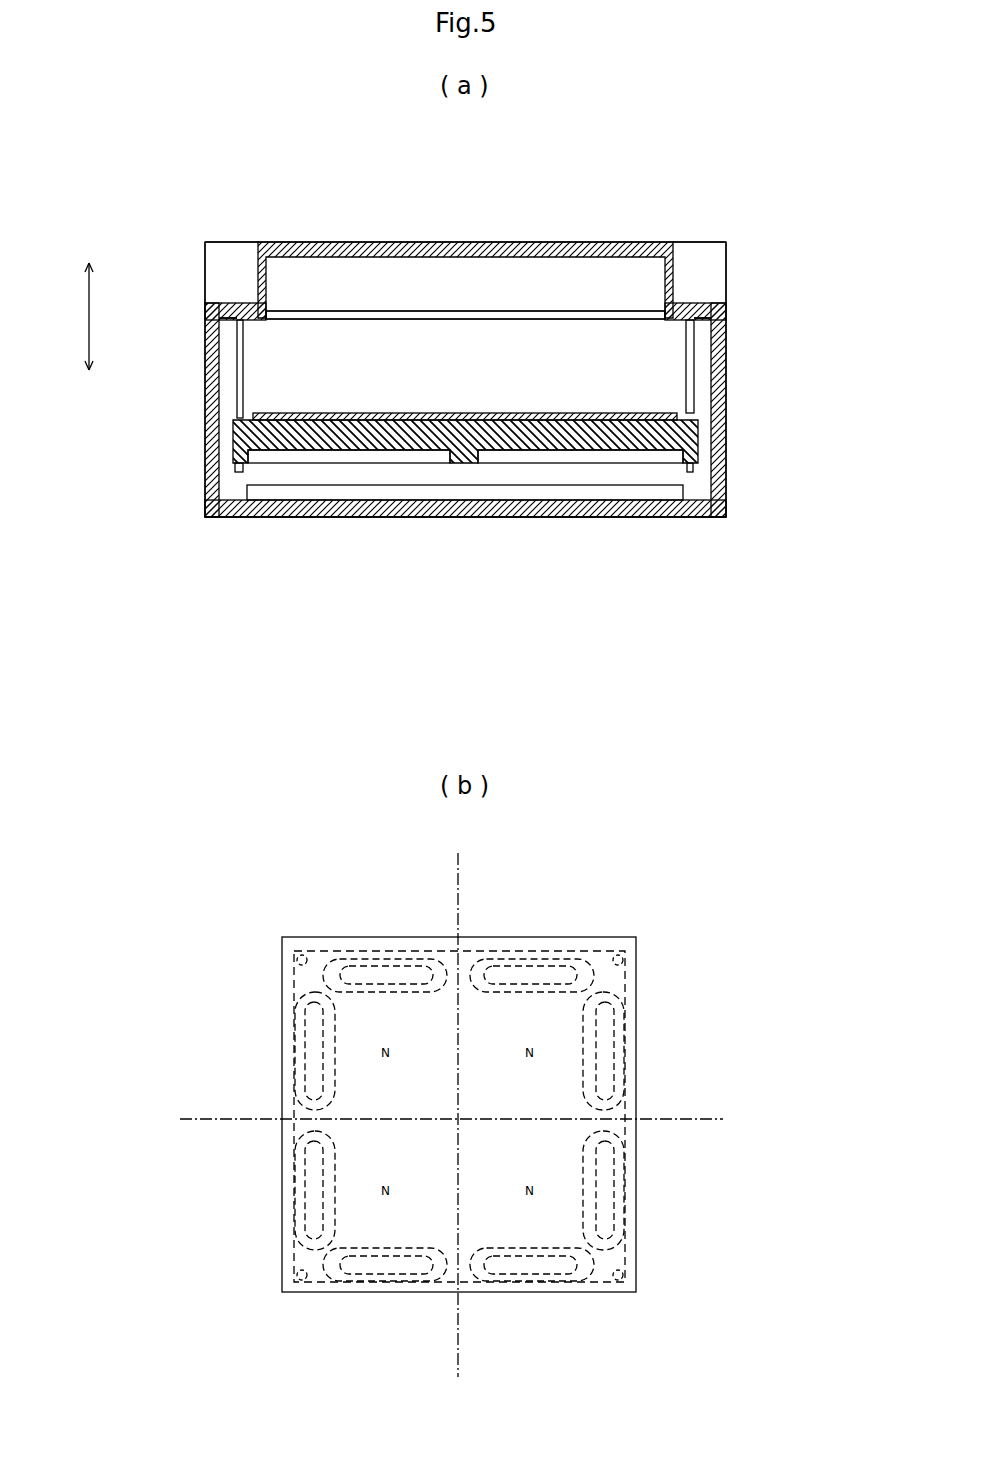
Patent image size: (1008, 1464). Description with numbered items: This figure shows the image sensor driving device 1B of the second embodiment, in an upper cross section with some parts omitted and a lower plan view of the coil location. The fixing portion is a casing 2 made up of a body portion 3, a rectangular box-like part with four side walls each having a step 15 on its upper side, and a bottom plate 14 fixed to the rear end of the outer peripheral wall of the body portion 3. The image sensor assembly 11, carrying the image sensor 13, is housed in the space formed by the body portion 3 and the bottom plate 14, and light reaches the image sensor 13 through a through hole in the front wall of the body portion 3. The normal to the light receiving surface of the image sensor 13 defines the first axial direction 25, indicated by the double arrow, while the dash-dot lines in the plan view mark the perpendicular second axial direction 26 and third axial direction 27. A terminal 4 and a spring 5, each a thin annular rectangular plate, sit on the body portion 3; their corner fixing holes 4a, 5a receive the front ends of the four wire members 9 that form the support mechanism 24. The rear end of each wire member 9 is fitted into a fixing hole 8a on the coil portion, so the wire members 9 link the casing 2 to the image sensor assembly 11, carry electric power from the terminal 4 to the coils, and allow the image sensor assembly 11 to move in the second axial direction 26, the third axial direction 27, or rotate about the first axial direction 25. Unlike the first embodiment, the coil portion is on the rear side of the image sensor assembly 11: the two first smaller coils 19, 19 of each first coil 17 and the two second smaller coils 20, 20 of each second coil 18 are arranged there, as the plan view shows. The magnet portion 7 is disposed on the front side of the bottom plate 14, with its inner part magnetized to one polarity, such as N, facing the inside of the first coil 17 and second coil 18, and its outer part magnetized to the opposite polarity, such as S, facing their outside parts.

The image sensor driving device 1B is at (112, 164).
The casing 2 is at (203, 238).
The body portion 3 is at (335, 243).
The terminal 4 is at (482, 318).
The spring 5 is at (482, 318).
The fixing hole 4a is at (213, 317).
The fixing hole 5a is at (213, 317).
The magnet portion 7 is at (332, 505).
The fixing hole 8a is at (233, 465).
The wire member 9 is at (240, 378).
The image sensor assembly 11 is at (263, 468).
The image sensor 13 is at (622, 413).
The bottom plate 14 is at (680, 517).
The step 15 is at (253, 303).
The first coil 17 is at (523, 622).
The second coil 18 is at (195, 1093).
The first smaller coil 19 is at (405, 462).
The second smaller coil 20 is at (617, 1143).
The support mechanism 24 is at (818, 292).
The first axial direction 25 is at (74, 316).
The second axial direction 26 is at (725, 1120).
The third axial direction 27 is at (458, 870).